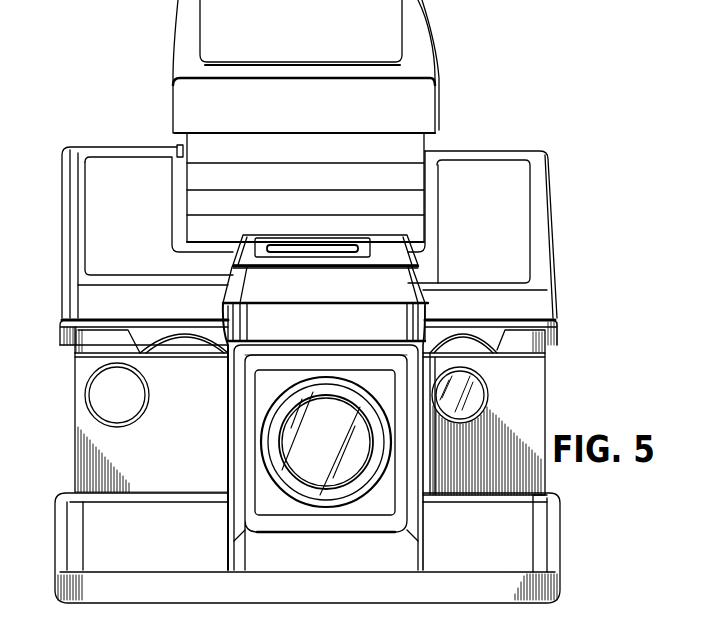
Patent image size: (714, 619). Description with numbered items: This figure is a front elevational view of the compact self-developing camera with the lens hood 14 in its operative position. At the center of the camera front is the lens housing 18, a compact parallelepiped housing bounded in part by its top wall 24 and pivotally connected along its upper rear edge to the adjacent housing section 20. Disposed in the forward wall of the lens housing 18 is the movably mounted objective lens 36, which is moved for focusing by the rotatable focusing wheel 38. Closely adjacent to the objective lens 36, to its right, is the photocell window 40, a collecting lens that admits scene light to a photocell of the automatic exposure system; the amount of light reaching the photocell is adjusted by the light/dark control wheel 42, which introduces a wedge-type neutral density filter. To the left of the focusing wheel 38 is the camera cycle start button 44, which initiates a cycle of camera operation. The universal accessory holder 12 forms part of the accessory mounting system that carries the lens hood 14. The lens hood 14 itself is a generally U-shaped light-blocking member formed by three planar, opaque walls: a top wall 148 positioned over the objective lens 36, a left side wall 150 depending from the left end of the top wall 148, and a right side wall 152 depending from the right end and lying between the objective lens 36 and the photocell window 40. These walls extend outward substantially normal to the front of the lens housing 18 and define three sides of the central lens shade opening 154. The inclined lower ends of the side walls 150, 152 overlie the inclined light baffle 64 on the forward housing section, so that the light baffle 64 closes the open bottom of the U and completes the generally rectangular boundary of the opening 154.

The universal accessory holder 12 is at (418, 282).
The lens hood 14 is at (289, 291).
The lens housing 18 is at (65, 381).
The adjacent housing section 20 is at (108, 222).
The top wall 24 is at (55, 542).
The objective lens 36 is at (288, 404).
The focusing wheel 38 is at (180, 340).
The photocell window 40 is at (470, 385).
The light/dark control wheel 42 is at (465, 343).
The camera cycle start button 44 is at (135, 390).
The light baffle 64 is at (138, 520).
The top wall 148 is at (310, 316).
The left side wall 150 is at (232, 526).
The right side wall 152 is at (418, 550).
The central lens shade opening 154 is at (376, 359).